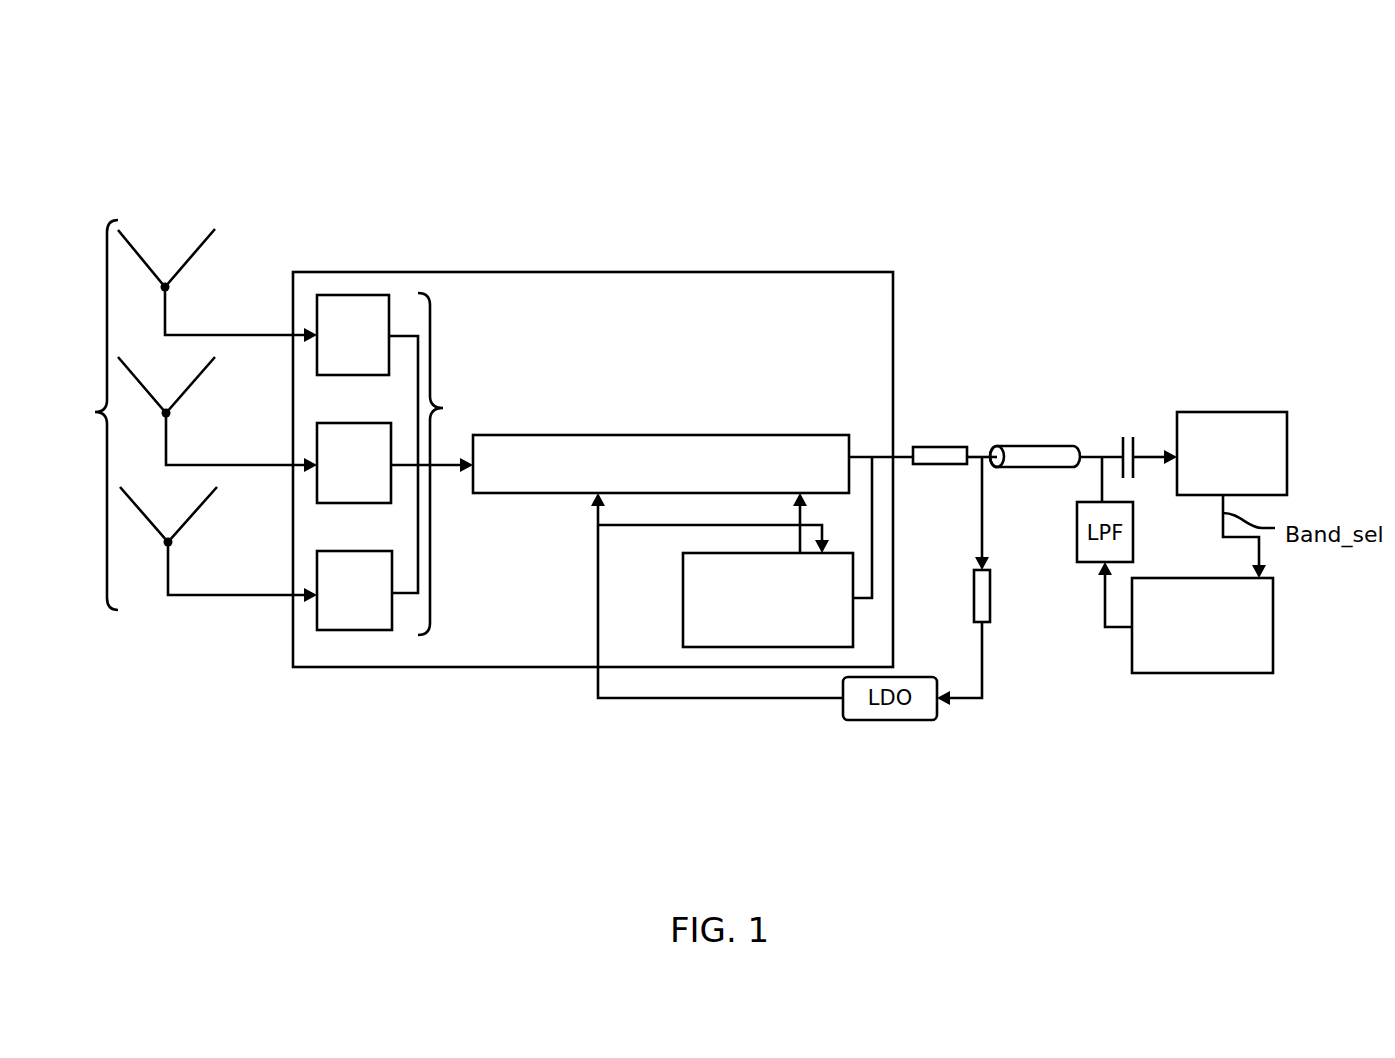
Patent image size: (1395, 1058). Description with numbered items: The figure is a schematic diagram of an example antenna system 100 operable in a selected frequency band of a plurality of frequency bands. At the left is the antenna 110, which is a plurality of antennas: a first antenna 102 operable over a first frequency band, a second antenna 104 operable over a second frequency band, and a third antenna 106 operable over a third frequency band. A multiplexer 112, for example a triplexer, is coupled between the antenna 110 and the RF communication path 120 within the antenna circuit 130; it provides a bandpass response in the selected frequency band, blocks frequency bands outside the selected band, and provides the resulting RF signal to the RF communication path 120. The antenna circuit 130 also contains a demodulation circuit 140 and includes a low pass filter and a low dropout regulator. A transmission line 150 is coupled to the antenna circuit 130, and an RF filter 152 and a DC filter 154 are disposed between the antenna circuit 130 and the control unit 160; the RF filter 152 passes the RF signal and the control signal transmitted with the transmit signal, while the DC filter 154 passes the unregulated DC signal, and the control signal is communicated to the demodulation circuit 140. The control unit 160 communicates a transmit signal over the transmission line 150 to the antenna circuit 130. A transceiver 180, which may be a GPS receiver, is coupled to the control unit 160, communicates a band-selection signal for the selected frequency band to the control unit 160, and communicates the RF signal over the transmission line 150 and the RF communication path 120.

The antenna system 100 is at (304, 124).
The first antenna 102 is at (168, 290).
The second antenna 104 is at (169, 416).
The third antenna 106 is at (171, 545).
The antenna 110 is at (95, 412).
The multiplexer 112 is at (403, 464).
The RF communication path 120 is at (715, 435).
The antenna circuit 130 is at (745, 272).
The demodulation circuit 140 is at (728, 648).
The transmission line 150 is at (1030, 446).
The RF filter 152 is at (936, 447).
The DC filter 154 is at (990, 598).
The control unit 160 is at (1198, 685).
The transceiver 180 is at (1215, 412).